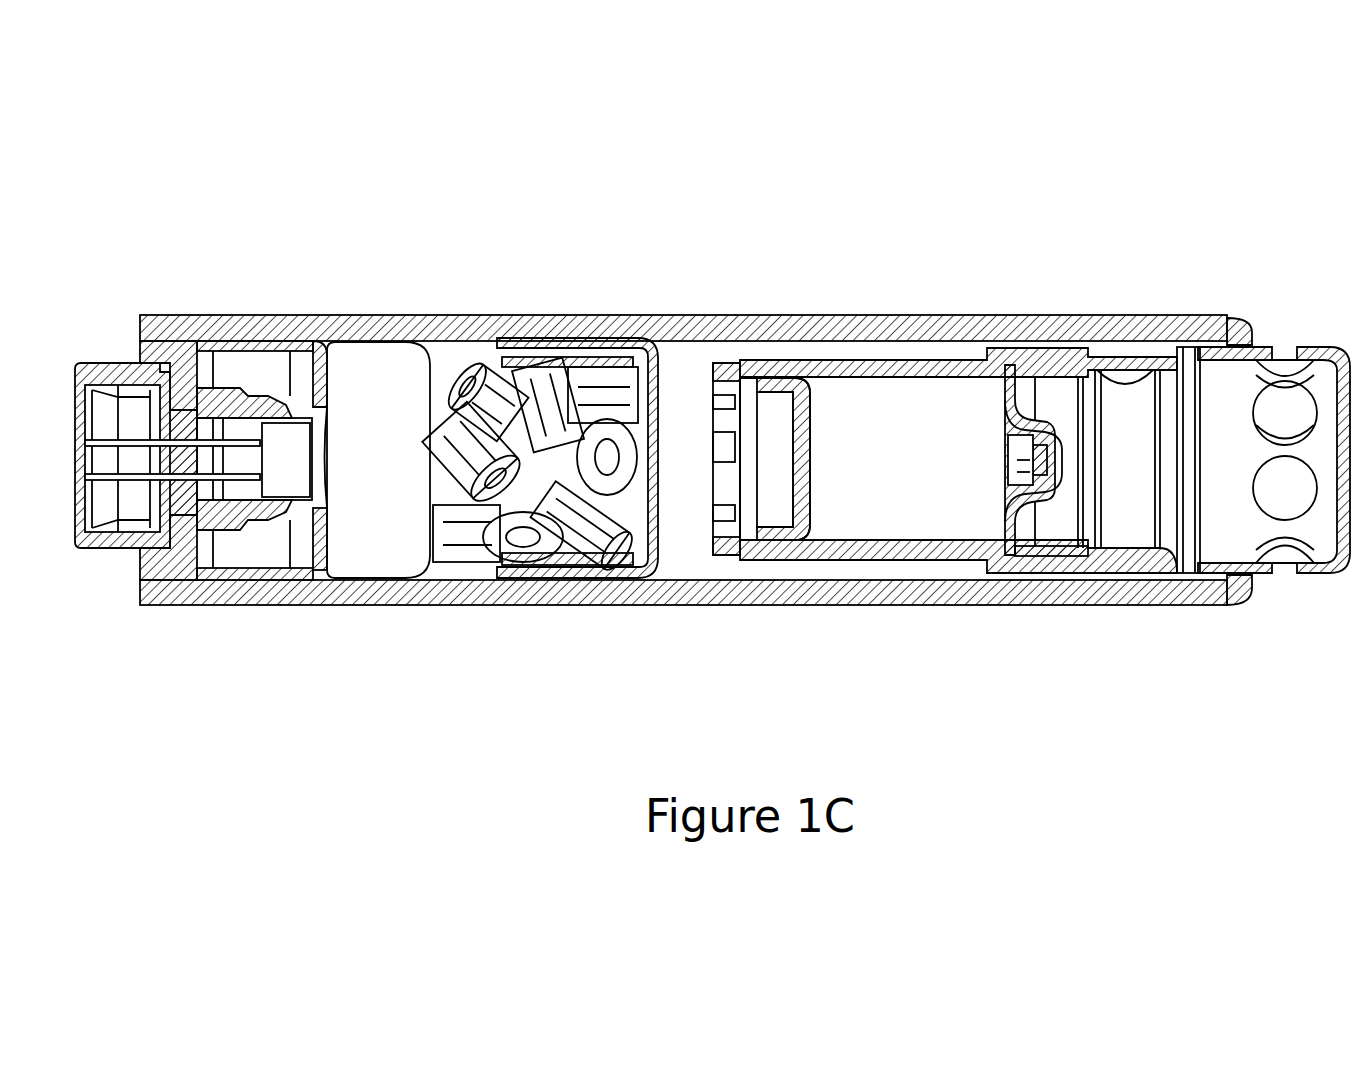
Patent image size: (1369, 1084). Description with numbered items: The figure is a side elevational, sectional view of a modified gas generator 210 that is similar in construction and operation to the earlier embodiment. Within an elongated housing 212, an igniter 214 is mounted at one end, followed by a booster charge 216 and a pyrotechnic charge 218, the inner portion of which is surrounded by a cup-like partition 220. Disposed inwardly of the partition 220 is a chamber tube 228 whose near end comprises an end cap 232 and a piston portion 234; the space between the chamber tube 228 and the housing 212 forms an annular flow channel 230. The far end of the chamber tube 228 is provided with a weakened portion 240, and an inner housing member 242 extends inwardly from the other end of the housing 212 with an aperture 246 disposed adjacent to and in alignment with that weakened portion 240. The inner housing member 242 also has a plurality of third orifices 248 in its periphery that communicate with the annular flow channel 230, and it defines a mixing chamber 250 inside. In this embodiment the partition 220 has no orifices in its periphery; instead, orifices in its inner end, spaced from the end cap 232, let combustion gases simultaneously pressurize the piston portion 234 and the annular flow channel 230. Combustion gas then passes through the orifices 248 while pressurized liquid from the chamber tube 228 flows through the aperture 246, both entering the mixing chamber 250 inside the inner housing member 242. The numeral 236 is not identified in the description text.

The gas generator 210 is at (770, 205).
The housing 212 is at (455, 322).
The igniter 214 is at (105, 360).
The booster charge 216 is at (372, 357).
The pyrotechnic charge 218 is at (440, 548).
The cup-like partition 220 is at (545, 587).
The chamber tube 228 is at (912, 360).
The annular flow channel 230 is at (868, 562).
The end cap 232 is at (731, 361).
The piston portion 234 is at (805, 478).
The basket wall 236 is at (657, 493).
The weakened portion 240 is at (1008, 462).
The inner housing member 242 is at (1145, 562).
The aperture 246 is at (1052, 463).
The third orifices 248 is at (1128, 362).
The mixing chamber 250 is at (1130, 542).